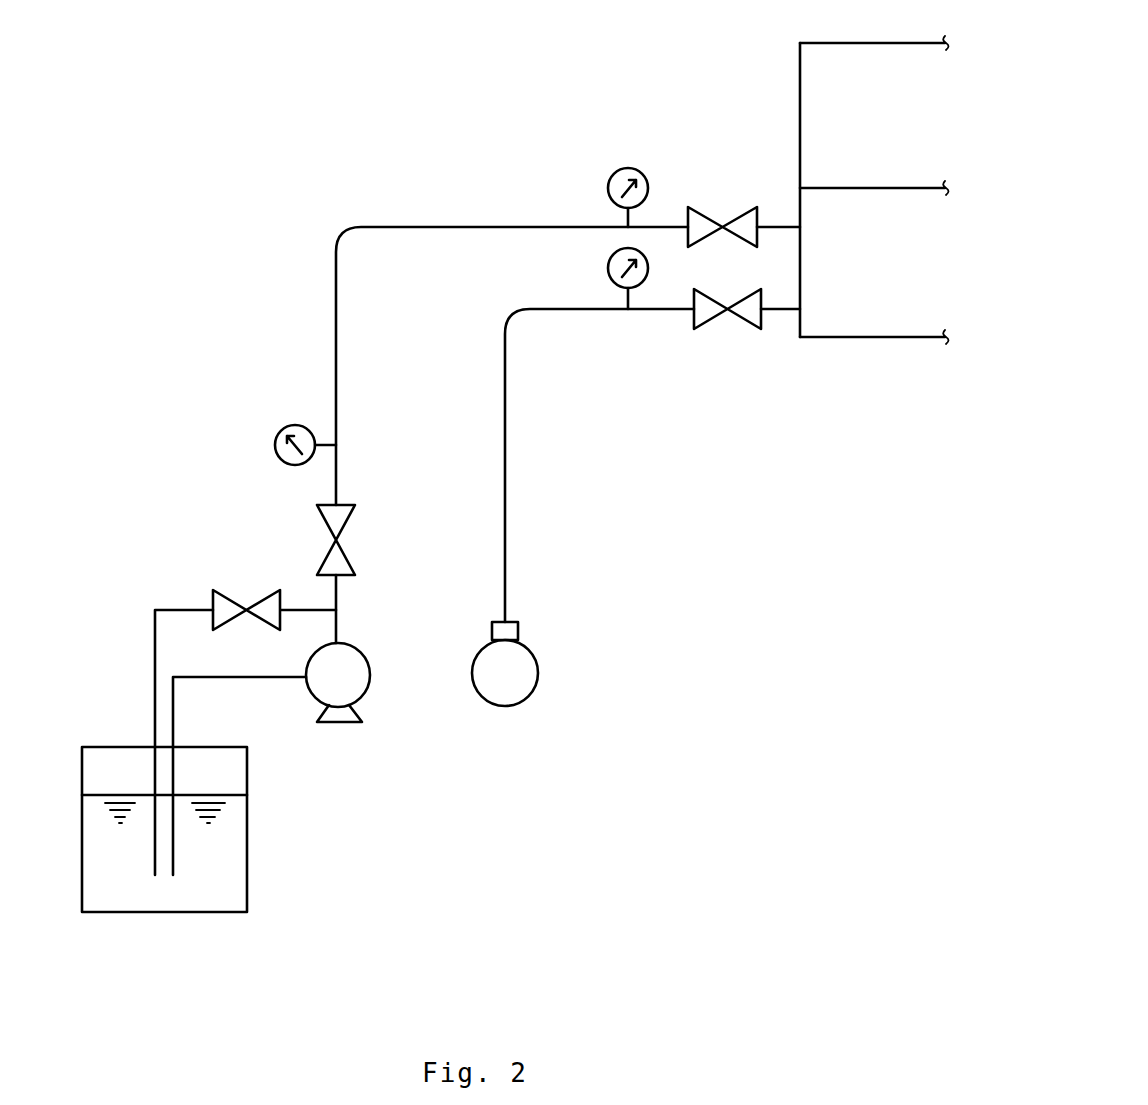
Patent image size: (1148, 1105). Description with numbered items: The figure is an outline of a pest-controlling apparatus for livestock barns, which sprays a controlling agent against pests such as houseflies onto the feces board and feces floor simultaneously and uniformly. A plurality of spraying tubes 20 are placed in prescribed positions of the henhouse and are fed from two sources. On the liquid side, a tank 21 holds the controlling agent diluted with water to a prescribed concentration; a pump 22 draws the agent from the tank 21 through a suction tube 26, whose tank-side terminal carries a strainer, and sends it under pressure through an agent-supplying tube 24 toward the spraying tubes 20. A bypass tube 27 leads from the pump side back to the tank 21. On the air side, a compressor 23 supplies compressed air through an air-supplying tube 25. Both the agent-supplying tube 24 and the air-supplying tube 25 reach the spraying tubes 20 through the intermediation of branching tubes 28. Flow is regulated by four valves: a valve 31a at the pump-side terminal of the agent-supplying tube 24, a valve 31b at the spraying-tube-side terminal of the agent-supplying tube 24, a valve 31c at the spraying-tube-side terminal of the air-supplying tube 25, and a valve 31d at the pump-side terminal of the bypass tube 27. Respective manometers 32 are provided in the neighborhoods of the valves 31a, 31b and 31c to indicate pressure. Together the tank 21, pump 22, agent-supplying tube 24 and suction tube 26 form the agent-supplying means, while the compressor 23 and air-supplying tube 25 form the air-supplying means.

The spraying tube 20 is at (843, 43).
The tank 21 is at (247, 851).
The pump 22 is at (372, 661).
The compressor 23 is at (538, 676).
The agent-supplying tube 24 is at (337, 404).
The air-supplying tube 25 is at (506, 401).
The suction tube 26 is at (258, 679).
The bypass tube 27 is at (162, 610).
The branching tube 28 is at (800, 88).
The valve 31a is at (350, 526).
The valve 31b is at (703, 207).
The valve 31c is at (712, 324).
The valve 31d is at (222, 591).
The manometer 32 is at (607, 190).